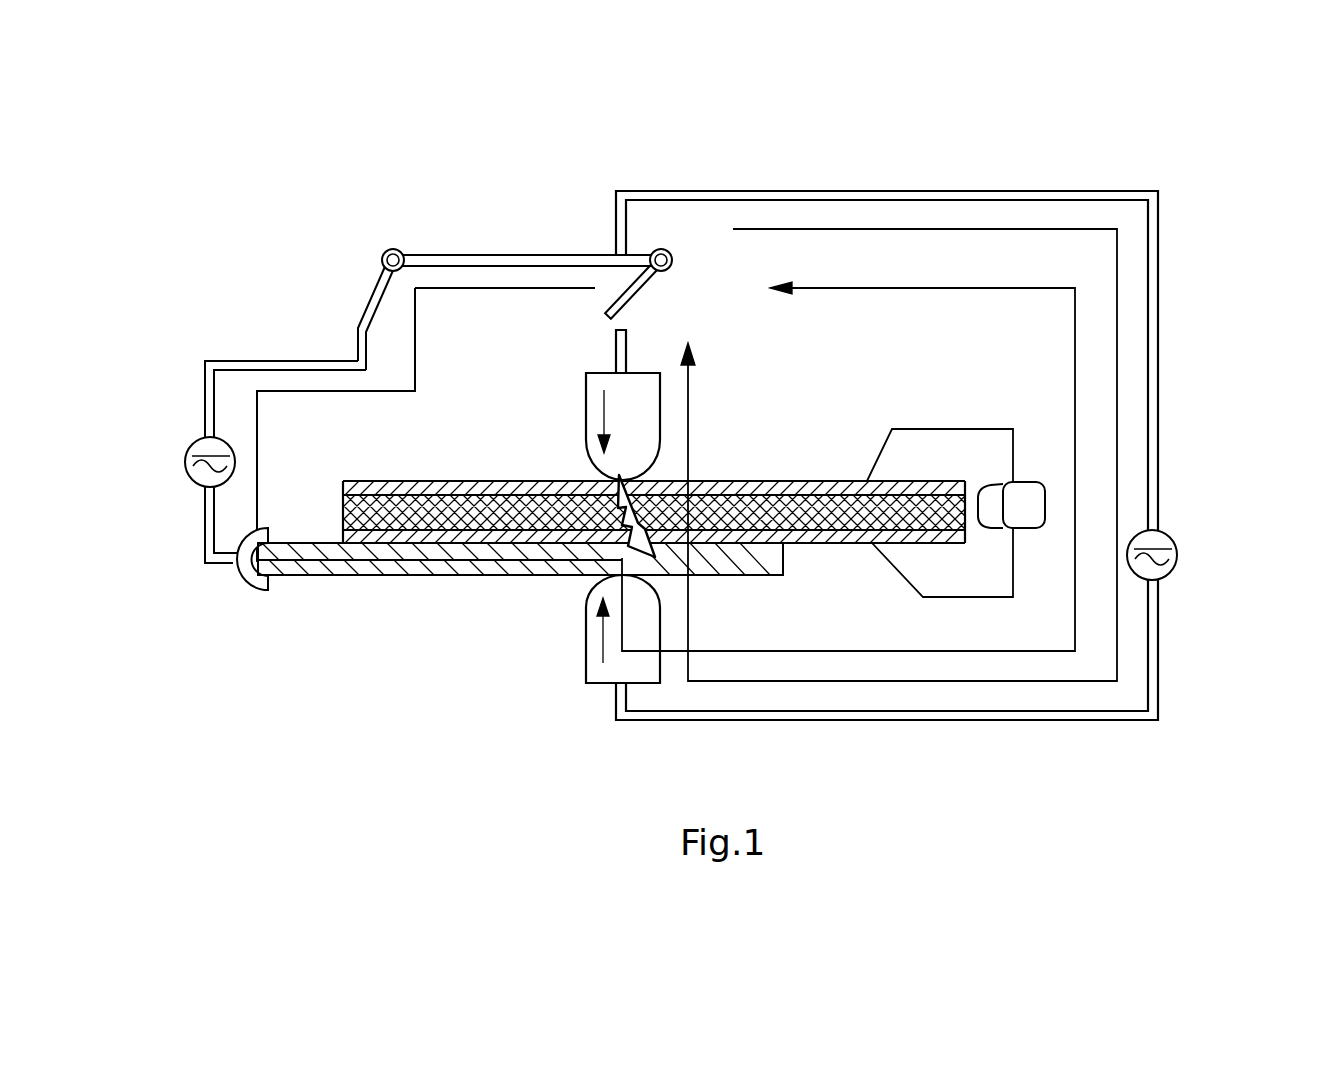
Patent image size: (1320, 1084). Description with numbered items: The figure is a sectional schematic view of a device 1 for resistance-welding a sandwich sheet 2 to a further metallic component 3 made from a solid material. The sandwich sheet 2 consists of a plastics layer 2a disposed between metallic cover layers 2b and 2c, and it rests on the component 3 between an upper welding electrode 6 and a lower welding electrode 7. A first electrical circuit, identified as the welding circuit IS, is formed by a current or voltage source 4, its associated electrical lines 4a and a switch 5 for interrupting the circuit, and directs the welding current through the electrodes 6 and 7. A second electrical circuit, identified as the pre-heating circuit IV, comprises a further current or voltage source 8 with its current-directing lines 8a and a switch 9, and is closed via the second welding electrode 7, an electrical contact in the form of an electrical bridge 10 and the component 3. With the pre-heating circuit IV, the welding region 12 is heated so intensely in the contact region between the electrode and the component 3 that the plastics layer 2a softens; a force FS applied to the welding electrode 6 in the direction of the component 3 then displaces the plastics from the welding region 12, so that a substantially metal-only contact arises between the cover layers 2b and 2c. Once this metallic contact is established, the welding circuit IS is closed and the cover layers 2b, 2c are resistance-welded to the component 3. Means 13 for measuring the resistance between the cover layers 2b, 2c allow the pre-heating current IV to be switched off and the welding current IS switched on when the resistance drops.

The device 1 is at (1196, 263).
The sandwich sheet 2 is at (656, 516).
The plastics layer 2a is at (798, 507).
The metallic cover layer 2b is at (843, 488).
The metallic cover layer 2c is at (830, 535).
The metallic component 3 is at (413, 577).
The current source 4 is at (1177, 539).
The electrical lines 4a is at (1002, 725).
The switch 5 is at (667, 249).
The welding electrode 6 is at (586, 392).
The welding electrode 7 is at (586, 668).
The current source 8 is at (187, 447).
The current-directing lines 8a is at (204, 521).
The switch 9 is at (390, 250).
The electrical bridge 10 is at (247, 577).
The welding region 12 is at (578, 465).
The means for resistance measuring 13 is at (1032, 530).
The electrical welding circuit IS is at (935, 228).
The electrical pre-heating circuit IV is at (867, 291).
The electrode force FS is at (602, 641).